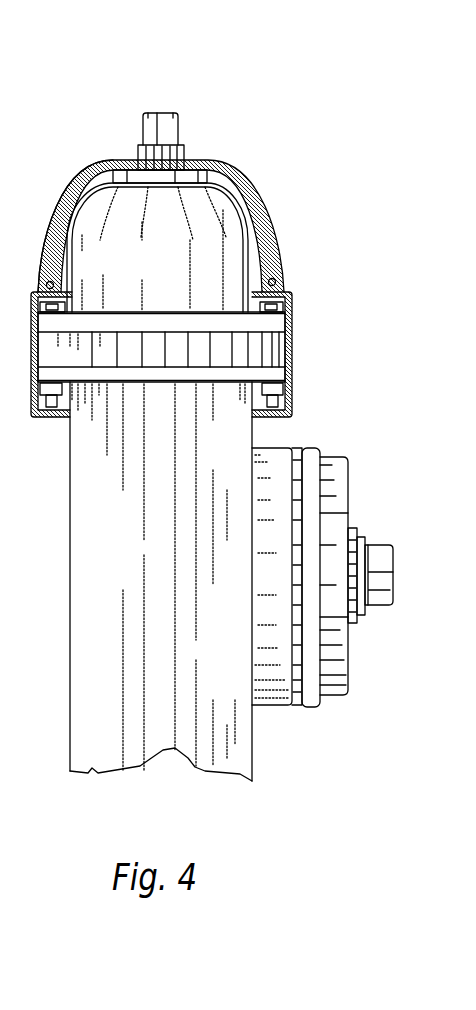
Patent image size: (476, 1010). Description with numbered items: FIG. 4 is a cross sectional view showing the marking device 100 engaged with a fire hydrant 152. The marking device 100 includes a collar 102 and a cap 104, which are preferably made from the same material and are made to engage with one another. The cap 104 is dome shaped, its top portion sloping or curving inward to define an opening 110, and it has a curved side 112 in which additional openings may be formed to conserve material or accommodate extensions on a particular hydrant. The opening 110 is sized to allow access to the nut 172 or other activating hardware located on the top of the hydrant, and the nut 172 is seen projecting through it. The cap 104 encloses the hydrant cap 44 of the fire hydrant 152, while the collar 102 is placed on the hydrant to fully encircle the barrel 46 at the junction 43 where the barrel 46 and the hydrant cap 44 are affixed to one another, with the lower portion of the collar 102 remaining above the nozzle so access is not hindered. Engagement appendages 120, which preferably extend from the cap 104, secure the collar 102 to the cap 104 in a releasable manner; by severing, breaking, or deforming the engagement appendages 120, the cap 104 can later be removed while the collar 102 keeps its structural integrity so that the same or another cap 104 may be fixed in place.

The marking device 100 is at (262, 152).
The collar 102 is at (291, 338).
The cap 104 is at (265, 213).
The curved side 112 is at (58, 215).
The hydrant cap 44 is at (244, 264).
The opening 110 is at (126, 168).
The nut 172 is at (170, 110).
The engagement appendages 120 is at (48, 281).
The junction 43 is at (266, 354).
The barrel 46 is at (253, 444).
The fire hydrant 152 is at (80, 742).